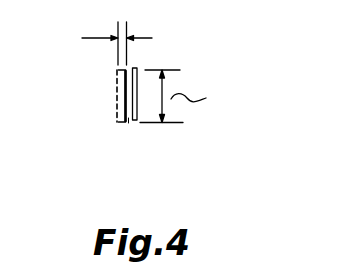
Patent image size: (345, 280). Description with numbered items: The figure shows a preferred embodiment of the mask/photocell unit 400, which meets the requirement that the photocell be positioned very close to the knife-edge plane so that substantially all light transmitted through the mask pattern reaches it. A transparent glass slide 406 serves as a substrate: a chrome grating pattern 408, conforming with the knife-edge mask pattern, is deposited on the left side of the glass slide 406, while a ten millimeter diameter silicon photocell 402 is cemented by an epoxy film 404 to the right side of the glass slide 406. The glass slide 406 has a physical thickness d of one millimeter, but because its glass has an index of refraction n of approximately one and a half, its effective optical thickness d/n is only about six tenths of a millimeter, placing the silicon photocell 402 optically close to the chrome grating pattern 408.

The mask/photocell unit 400 is at (176, 117).
The silicon photocell 402 is at (136, 121).
The epoxy film 404 is at (128, 123).
The glass slide 406 is at (118, 122).
The chrome grating pattern 408 is at (108, 78).